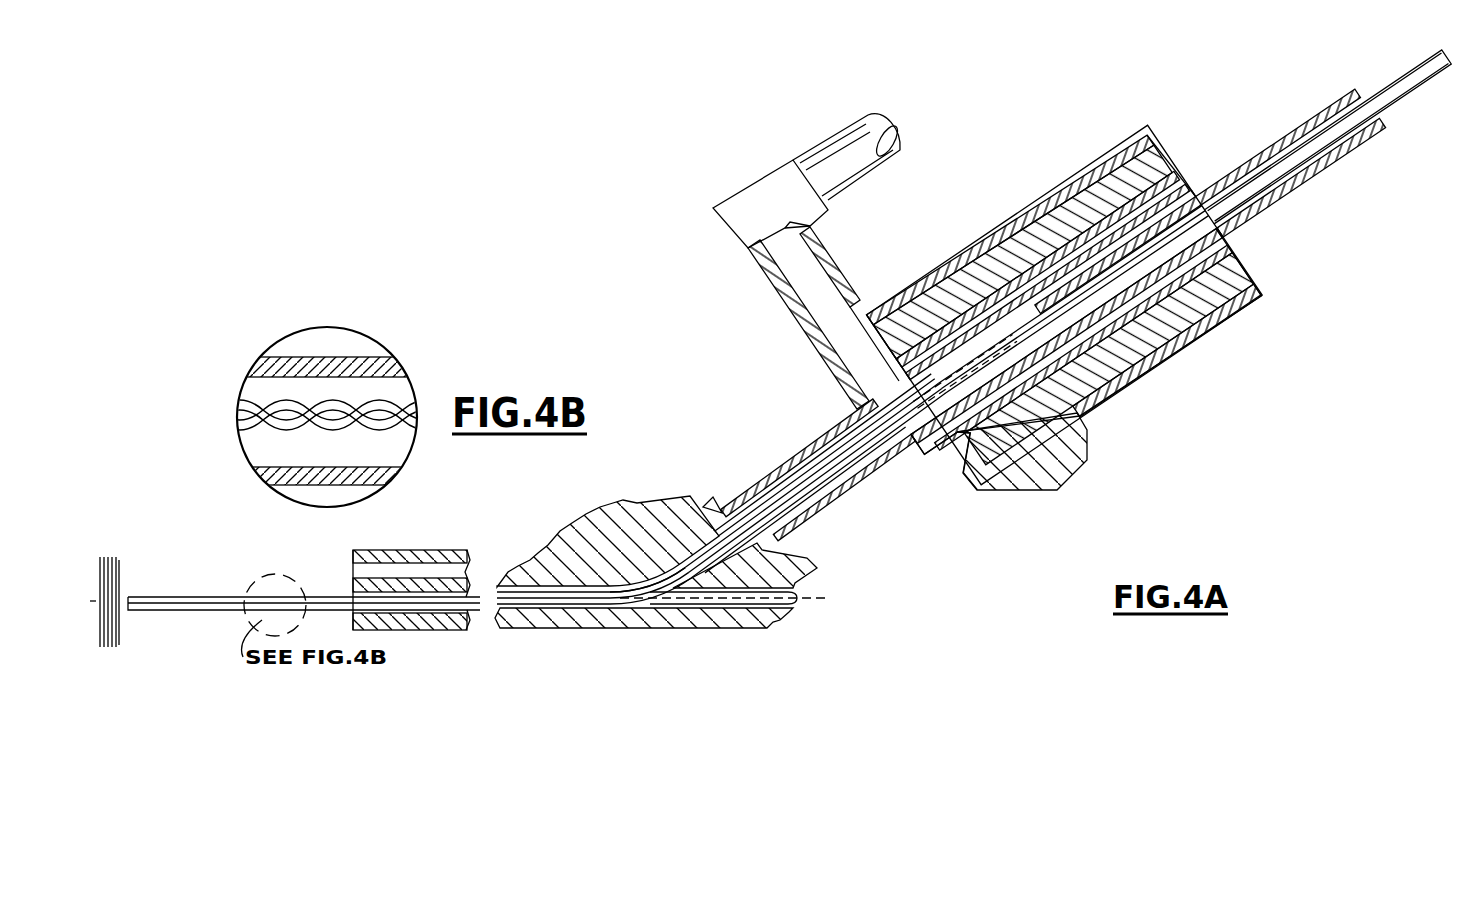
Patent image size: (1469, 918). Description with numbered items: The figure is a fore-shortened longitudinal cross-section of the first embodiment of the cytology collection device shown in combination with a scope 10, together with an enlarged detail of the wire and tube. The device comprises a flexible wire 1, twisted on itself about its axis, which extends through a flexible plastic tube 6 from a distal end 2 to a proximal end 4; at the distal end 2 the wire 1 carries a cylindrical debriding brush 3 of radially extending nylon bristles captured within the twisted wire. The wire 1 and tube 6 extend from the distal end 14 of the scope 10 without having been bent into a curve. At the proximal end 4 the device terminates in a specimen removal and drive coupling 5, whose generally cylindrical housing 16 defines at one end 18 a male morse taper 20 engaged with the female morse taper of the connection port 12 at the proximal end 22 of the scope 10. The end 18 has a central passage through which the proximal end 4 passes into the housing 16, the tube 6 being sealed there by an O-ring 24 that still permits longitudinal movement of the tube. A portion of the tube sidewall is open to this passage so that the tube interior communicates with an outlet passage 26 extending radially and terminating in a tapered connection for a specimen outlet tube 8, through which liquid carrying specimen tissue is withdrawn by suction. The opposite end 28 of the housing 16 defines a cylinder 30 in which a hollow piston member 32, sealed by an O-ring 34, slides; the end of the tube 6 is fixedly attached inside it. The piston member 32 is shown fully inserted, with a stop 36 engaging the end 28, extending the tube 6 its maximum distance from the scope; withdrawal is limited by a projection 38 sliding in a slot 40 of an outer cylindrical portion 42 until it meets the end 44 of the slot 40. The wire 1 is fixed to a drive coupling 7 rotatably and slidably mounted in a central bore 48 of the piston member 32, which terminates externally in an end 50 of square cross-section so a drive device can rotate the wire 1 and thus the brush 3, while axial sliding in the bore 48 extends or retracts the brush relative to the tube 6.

In FIG. 4A, the flexible wire 1 is at (123, 608).
In FIG. 4B, the flexible wire 1 is at (387, 400).
In FIG. 4A, the distal end 2 is at (649, 442).
In FIG. 4A, the debriding brush 3 is at (120, 572).
In FIG. 4A, the proximal end 4 is at (648, 560).
In FIG. 4A, the specimen removal and drive coupling 5 is at (1058, 147).
In FIG. 4A, the flexible plastic tube 6 is at (178, 597).
In FIG. 4B, the flexible plastic tube 6 is at (353, 360).
In FIG. 4A, the drive coupling 7 is at (1396, 116).
In FIG. 4A, the specimen outlet tube 8 is at (912, 132).
In FIG. 4A, the scope 10 is at (620, 630).
In FIG. 4A, the connection port 12 is at (737, 493).
In FIG. 4A, the distal end of the scope 14 is at (405, 550).
In FIG. 4A, the cylindrical housing 16 is at (967, 253).
In FIG. 4A, the end of the housing 18 is at (797, 537).
In FIG. 4A, the male morse taper 20 is at (757, 548).
In FIG. 4A, the proximal end of the scope 22 is at (592, 518).
In FIG. 4A, the O-ring 24 is at (712, 497).
In FIG. 4A, the outlet passage 26 is at (800, 286).
In FIG. 4A, the end of the housing 28 is at (1222, 248).
In FIG. 4A, the cylinder 30 is at (1080, 365).
In FIG. 4A, the hollow piston member 32 is at (1130, 340).
In FIG. 4A, the O-ring 34 is at (915, 365).
In FIG. 4A, the stop 36 is at (1195, 188).
In FIG. 4A, the projection 38 is at (1040, 478).
In FIG. 4A, the slot 40 is at (1200, 337).
In FIG. 4A, the outer cylindrical portion 42 is at (1092, 170).
In FIG. 4A, the end of the slot 44 is at (1232, 313).
In FIG. 4A, the central bore 48 is at (1233, 230).
In FIG. 4A, the square cross-section end 50 is at (1408, 80).